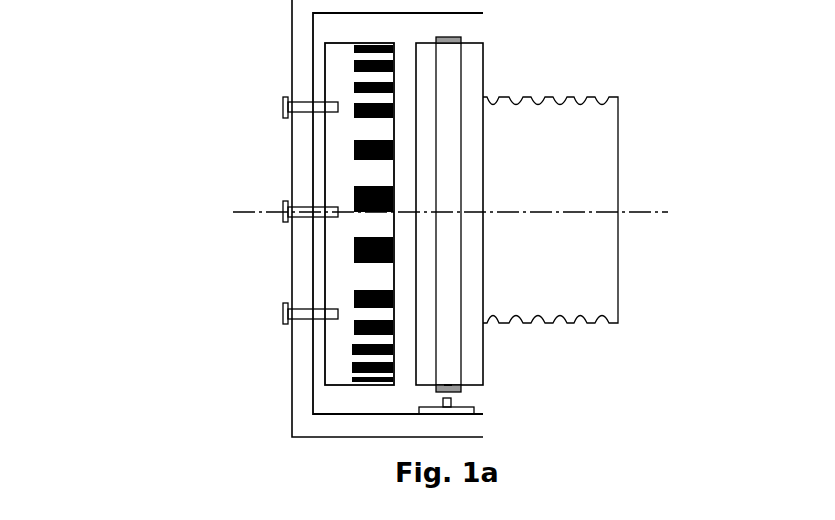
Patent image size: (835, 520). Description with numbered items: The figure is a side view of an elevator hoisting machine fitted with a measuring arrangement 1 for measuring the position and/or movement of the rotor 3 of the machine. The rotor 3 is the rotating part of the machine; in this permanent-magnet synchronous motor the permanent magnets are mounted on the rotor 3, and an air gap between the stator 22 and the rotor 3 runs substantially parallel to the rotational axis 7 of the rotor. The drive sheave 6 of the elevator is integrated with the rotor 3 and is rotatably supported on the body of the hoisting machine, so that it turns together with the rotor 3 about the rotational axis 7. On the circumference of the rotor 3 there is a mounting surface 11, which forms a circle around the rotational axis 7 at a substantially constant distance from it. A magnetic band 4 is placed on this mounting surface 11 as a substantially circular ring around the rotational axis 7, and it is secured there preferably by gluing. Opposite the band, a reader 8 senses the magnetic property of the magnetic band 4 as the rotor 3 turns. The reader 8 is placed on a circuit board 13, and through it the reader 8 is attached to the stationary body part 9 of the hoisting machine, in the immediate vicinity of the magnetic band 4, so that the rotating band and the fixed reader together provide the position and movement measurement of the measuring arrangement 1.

The measuring arrangement 1 is at (166, 88).
The rotor 3 is at (484, 60).
The magnetic band 4 is at (470, 43).
The drive sheave 6 is at (593, 97).
The rotational axis 7 is at (648, 212).
The reader 8 is at (451, 399).
The stationary body part 9 is at (292, 278).
The mounting surface 11 is at (447, 385).
The circuit board 13 is at (474, 412).
The stator 22 is at (325, 367).